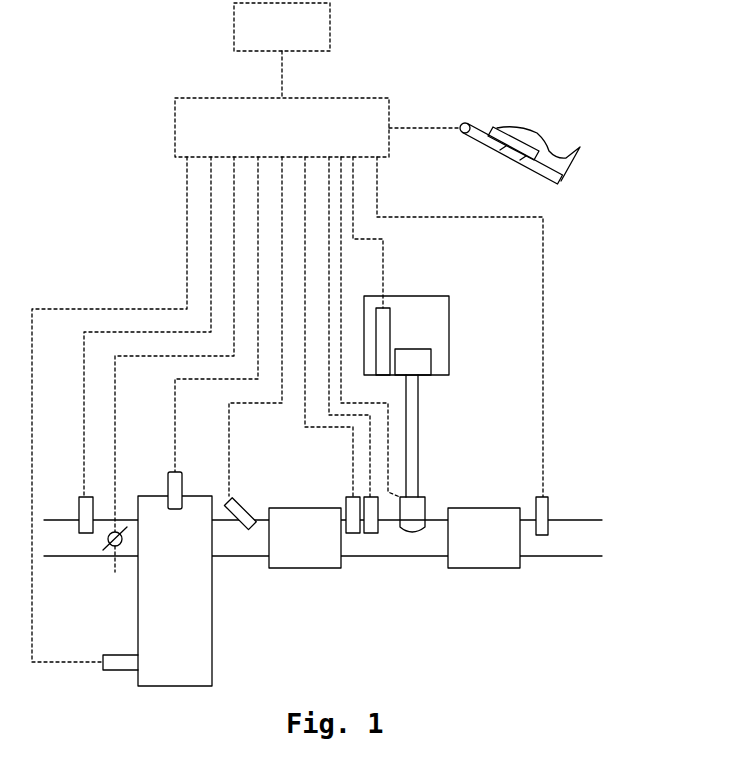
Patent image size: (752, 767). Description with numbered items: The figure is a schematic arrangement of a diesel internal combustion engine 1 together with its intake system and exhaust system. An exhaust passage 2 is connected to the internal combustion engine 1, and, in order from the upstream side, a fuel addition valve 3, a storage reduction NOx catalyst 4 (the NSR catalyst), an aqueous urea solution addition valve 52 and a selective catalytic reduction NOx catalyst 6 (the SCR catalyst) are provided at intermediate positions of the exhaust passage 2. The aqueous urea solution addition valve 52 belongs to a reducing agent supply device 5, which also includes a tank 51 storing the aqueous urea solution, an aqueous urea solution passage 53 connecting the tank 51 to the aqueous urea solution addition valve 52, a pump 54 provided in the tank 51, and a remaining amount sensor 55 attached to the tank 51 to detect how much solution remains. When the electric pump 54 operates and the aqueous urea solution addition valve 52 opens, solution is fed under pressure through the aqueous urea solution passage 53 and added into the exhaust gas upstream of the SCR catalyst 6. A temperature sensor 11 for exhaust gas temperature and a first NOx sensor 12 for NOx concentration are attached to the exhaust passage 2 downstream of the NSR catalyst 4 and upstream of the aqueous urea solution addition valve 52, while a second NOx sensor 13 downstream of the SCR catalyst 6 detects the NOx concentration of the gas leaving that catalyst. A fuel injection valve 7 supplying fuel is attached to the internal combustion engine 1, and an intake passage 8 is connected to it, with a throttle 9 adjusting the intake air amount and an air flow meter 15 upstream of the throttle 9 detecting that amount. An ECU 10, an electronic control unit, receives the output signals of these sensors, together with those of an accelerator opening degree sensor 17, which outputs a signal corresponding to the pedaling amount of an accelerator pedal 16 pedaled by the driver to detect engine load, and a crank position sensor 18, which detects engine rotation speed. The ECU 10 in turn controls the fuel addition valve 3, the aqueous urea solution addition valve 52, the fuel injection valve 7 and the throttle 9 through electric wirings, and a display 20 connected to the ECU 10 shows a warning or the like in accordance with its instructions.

The internal combustion engine 1 is at (212, 662).
The exhaust passage 2 is at (405, 556).
The fuel addition valve 3 is at (242, 501).
The storage reduction NOx catalyst 4 is at (310, 568).
The reducing agent supply device 5 is at (447, 398).
The selective catalytic reduction NOx catalyst 6 is at (480, 568).
The fuel injection valve 7 is at (186, 477).
The intake passage 8 is at (87, 556).
The throttle 9 is at (115, 563).
The ECU 10 is at (389, 110).
The temperature sensor 11 is at (346, 505).
The first NOx sensor 12 is at (372, 533).
The second NOx sensor 13 is at (548, 510).
The air flow meter 15 is at (78, 500).
The accelerator pedal 16 is at (523, 165).
The accelerator opening degree sensor 17 is at (459, 132).
The crank position sensor 18 is at (122, 655).
The display 20 is at (330, 22).
The tank 51 is at (449, 300).
The aqueous urea solution addition valve 52 is at (425, 510).
The aqueous urea solution passage 53 is at (418, 395).
The pump 54 is at (431, 370).
The remaining amount sensor 55 is at (390, 308).